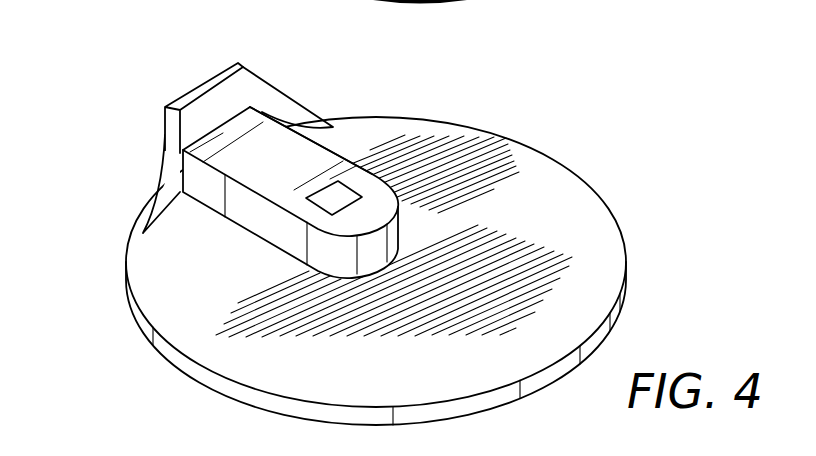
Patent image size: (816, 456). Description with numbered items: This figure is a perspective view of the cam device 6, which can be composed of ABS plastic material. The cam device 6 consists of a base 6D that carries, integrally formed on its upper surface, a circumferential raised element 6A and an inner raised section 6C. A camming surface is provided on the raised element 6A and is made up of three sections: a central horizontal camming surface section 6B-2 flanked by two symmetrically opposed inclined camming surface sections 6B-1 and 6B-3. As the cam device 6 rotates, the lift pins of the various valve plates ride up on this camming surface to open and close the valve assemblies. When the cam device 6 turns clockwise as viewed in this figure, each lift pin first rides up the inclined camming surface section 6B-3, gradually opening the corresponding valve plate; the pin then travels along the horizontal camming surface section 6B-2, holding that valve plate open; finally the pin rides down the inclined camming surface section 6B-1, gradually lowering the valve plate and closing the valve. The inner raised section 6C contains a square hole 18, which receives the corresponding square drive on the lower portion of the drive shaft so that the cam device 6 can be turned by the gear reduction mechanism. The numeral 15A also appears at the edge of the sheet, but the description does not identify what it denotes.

The disc-shaped base member 6 is at (166, 377).
The slider block 6A is at (238, 93).
The lower leg portion of spring arm 6B-1 is at (148, 189).
The inclined portion of spring arm 6B-2 is at (193, 90).
The tip portion of spring arm 6B-3 is at (282, 110).
The edge of slider block 6C is at (372, 174).
The top surface of base member 6D is at (607, 266).
The rectangular opening 18 is at (362, 197).
The partially visible numeral 15A is at (658, 7).